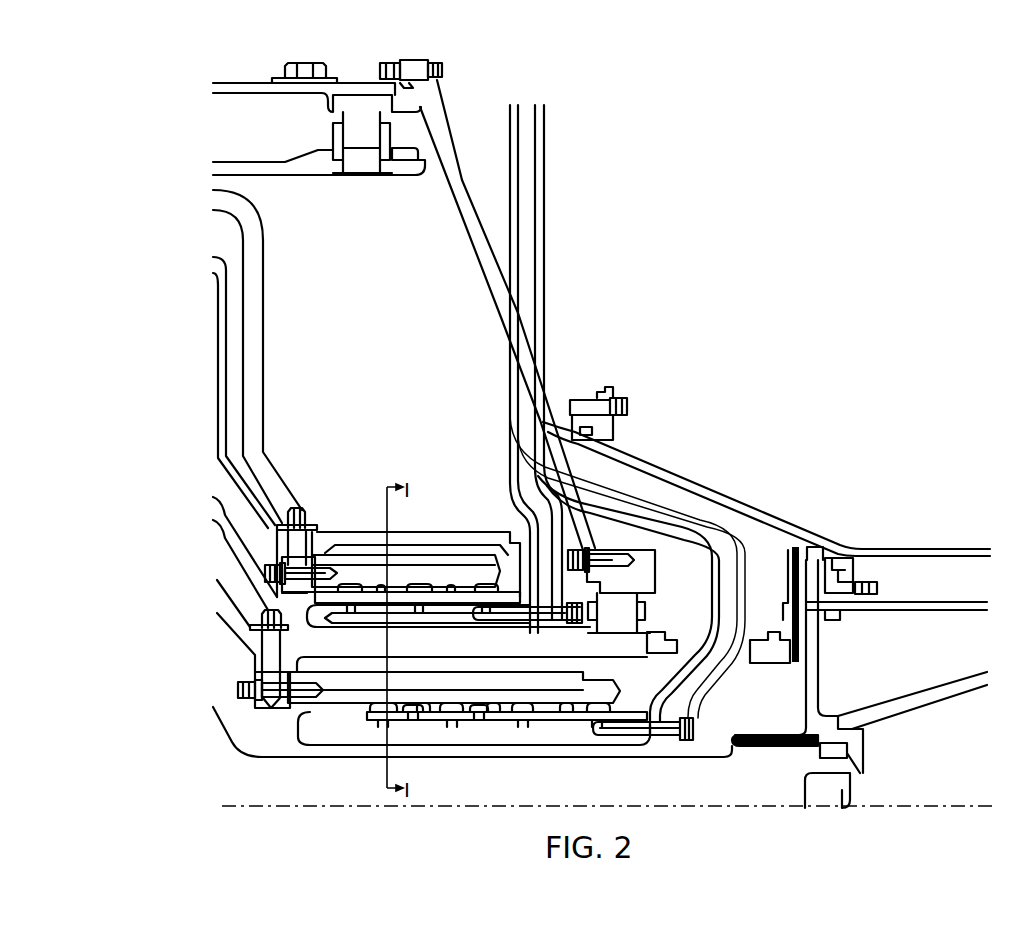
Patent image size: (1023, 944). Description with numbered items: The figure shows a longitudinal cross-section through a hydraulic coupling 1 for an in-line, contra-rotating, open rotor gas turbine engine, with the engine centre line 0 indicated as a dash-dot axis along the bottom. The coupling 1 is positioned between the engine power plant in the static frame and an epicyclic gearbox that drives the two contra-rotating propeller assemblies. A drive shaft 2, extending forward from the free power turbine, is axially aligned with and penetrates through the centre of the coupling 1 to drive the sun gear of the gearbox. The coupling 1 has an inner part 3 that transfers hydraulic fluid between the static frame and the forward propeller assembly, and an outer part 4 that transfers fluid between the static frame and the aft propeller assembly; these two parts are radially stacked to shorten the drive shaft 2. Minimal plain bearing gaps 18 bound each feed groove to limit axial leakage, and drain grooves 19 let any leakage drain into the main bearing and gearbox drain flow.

The hydraulic coupling 1 is at (120, 510).
The drive shaft 2 is at (670, 787).
The inner part 3 is at (172, 636).
The outer part 4 is at (172, 515).
The plain bearing gaps 18 is at (408, 714).
The drain grooves 19 is at (445, 714).
The engine centre line 0 is at (606, 807).